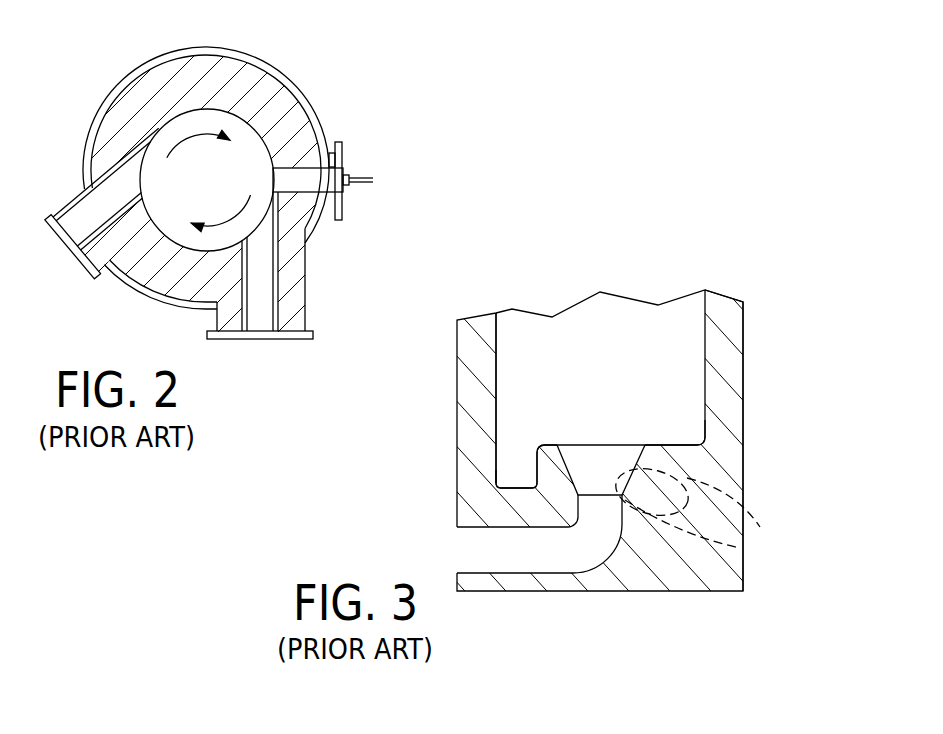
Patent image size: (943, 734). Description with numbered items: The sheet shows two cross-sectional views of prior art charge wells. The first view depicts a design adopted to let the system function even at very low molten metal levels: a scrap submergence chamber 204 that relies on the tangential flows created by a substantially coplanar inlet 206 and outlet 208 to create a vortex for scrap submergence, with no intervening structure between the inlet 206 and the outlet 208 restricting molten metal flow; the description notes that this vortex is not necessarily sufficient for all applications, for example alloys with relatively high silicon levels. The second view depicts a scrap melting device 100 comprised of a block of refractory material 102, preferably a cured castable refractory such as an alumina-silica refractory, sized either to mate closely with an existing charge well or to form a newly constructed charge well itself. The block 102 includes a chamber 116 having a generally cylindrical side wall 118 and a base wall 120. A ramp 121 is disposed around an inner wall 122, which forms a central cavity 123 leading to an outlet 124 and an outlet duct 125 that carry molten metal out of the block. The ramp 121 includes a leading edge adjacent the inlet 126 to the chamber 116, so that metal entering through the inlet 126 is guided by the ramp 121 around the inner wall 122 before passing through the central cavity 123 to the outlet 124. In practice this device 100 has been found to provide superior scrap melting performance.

In FIG. 2, the scrap submergence chamber 204 is at (221, 190).
In FIG. 2, the inlet 206 is at (72, 248).
In FIG. 2, the outlet 208 is at (258, 313).
In FIG. 3, the scrap melting device 100 is at (705, 606).
In FIG. 3, the block of refractory material 102 is at (732, 330).
In FIG. 3, the chamber 116 is at (620, 364).
In FIG. 3, the cylindrical side wall 118 is at (505, 339).
In FIG. 3, the base wall 120 is at (512, 483).
In FIG. 3, the ramp 121 is at (662, 443).
In FIG. 3, the inner wall 122 is at (548, 425).
In FIG. 3, the central cavity 123 is at (608, 462).
In FIG. 3, the outlet 124 is at (601, 500).
In FIG. 3, the outlet duct 125 is at (478, 552).
In FIG. 3, the inlet 126 is at (743, 527).